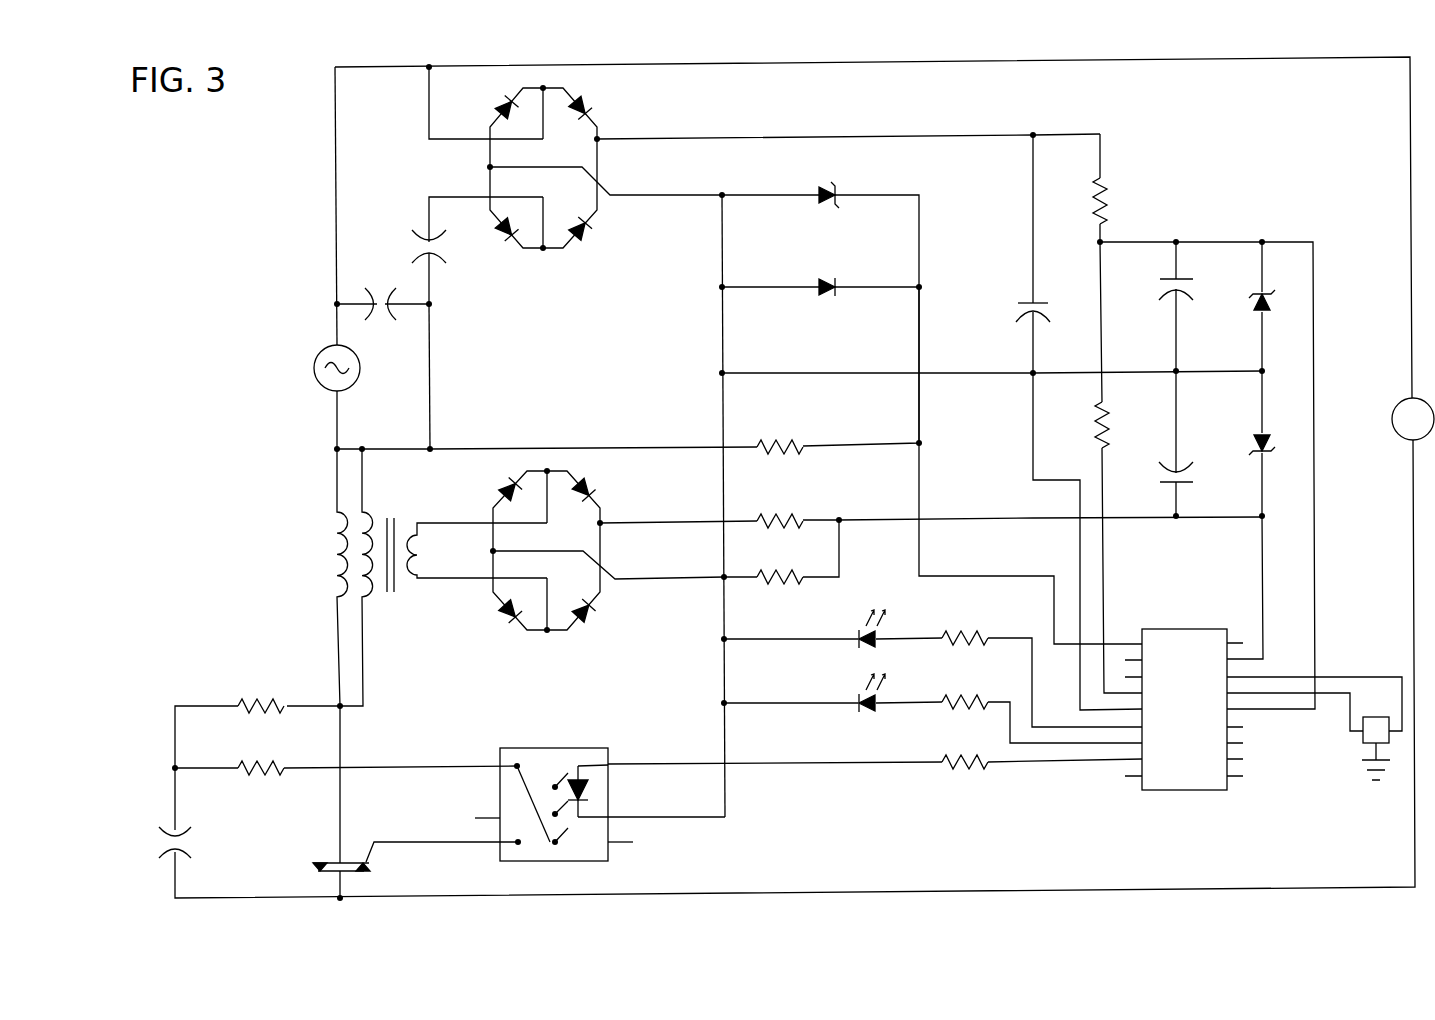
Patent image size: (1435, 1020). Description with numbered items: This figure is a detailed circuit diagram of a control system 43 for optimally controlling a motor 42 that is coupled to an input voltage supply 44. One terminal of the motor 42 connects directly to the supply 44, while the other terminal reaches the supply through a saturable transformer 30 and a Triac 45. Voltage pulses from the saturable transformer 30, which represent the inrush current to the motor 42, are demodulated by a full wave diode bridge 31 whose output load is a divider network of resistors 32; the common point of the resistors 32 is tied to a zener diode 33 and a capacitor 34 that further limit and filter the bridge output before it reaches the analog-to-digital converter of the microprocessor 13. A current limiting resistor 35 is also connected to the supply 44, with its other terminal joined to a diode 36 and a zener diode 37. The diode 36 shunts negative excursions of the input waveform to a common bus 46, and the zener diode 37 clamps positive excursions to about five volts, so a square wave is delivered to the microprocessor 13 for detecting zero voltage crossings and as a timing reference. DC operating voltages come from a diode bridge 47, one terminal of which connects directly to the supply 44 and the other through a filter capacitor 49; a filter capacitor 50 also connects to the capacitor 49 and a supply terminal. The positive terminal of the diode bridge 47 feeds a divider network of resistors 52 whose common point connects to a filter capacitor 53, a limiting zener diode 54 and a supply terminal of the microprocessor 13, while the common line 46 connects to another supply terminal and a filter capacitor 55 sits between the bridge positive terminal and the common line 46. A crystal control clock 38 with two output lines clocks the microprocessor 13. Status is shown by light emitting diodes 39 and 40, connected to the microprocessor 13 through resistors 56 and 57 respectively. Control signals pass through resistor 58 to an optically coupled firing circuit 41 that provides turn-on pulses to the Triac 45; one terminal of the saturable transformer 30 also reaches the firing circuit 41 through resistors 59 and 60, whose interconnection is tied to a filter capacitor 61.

The microprocessor 13 is at (1199, 722).
The saturable transformer 30 is at (335, 545).
The full wave diode bridge 31 is at (493, 590).
The resistors 32 is at (797, 520).
The zener diode 33 is at (1250, 440).
The capacitor 34 is at (1170, 465).
The current limiting resistor 35 is at (797, 445).
The diode 36 is at (828, 297).
The zener diode 37 is at (825, 205).
The crystal control clock 38 is at (1365, 740).
The light emitting diode 39 is at (865, 648).
The light emitting diode 40 is at (868, 712).
The optically coupled firing circuit 41 is at (567, 748).
The motor 42 is at (1393, 412).
The control system 43 is at (290, 204).
The input voltage supply 44 is at (318, 358).
The Triac 45 is at (350, 860).
The common bus 46 is at (722, 333).
The diode bridge 47 is at (600, 120).
The filter capacitor 49 is at (422, 230).
The filter capacitor 50 is at (383, 290).
The resistors 52 is at (1106, 185).
The filter capacitor 53 is at (1170, 290).
The limiting zener diode 54 is at (1250, 305).
The filter capacitor 55 is at (1026, 303).
The resistor 56 is at (965, 635).
The resistor 57 is at (975, 700).
The resistor 58 is at (958, 768).
The resistor 59 is at (253, 700).
The resistor 60 is at (250, 762).
The filter capacitor 61 is at (195, 845).